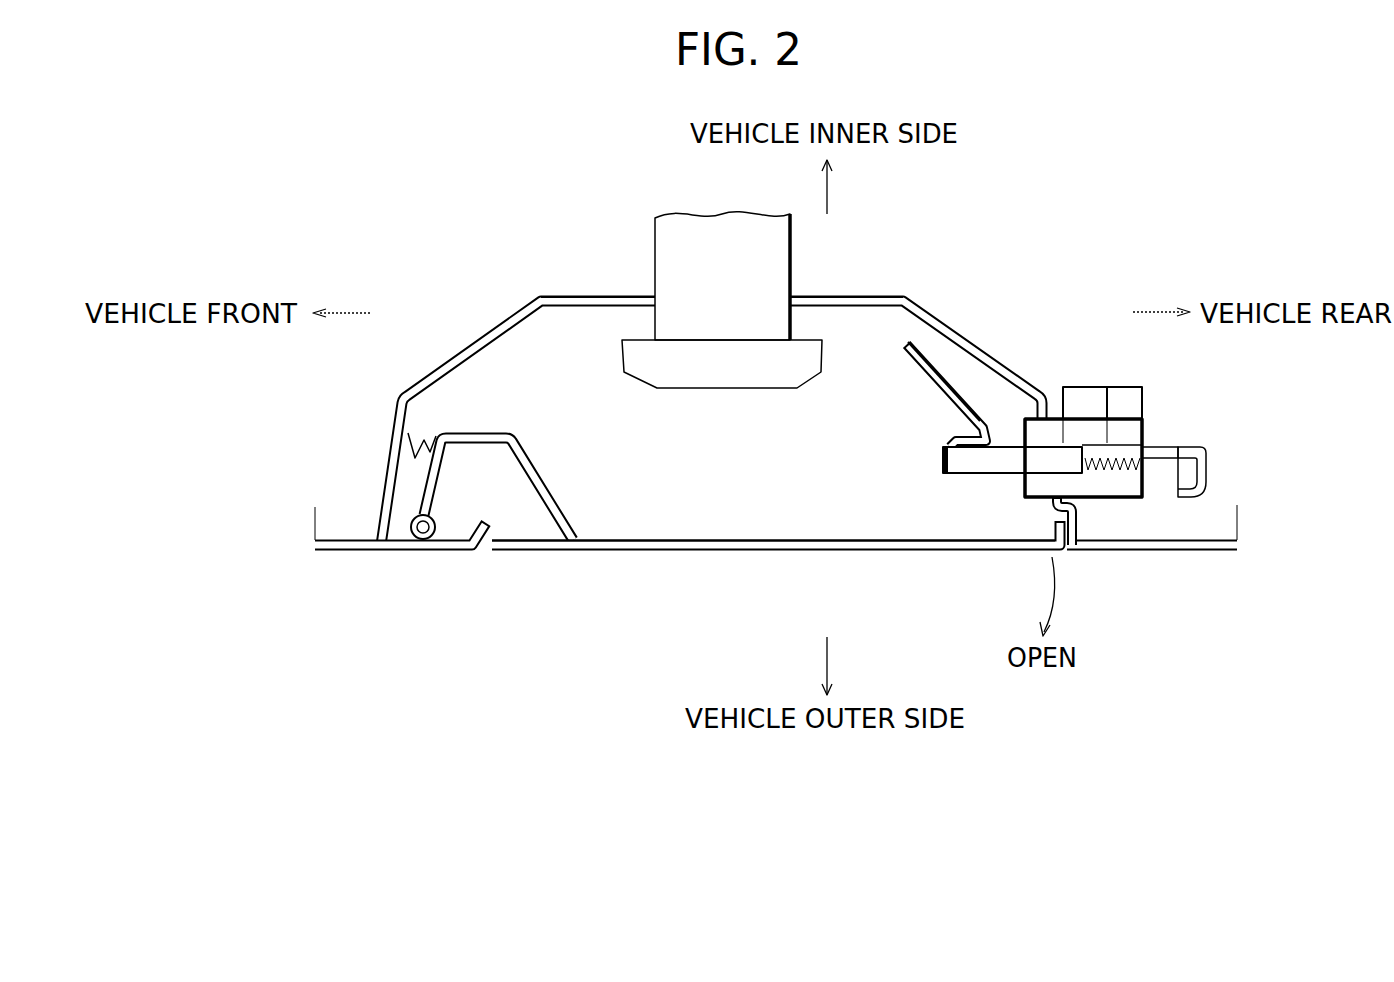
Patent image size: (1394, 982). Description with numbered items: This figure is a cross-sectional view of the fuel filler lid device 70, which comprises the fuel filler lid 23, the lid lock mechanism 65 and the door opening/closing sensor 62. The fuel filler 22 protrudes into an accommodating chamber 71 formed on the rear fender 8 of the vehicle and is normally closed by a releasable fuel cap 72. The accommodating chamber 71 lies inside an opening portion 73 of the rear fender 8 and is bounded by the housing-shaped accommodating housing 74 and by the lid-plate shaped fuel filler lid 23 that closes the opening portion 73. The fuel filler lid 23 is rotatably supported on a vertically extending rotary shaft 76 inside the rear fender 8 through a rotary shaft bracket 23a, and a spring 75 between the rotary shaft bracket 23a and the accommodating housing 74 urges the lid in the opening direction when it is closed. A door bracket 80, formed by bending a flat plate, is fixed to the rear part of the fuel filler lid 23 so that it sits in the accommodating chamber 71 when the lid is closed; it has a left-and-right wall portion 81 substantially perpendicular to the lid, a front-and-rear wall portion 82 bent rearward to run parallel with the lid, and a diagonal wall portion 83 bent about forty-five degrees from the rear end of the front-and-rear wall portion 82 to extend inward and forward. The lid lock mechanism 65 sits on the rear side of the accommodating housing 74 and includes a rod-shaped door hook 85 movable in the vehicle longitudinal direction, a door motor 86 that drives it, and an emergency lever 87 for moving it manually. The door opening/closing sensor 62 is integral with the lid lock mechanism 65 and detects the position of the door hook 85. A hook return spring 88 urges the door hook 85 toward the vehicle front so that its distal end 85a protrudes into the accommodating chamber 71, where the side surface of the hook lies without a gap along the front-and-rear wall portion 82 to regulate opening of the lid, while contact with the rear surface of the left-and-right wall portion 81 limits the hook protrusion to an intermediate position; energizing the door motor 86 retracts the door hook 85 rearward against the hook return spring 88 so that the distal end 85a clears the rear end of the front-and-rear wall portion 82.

The rear fender 8 is at (350, 553).
The fuel filler 22 is at (737, 342).
The fuel filler lid 23 is at (707, 556).
The rotary shaft bracket 23a is at (481, 433).
The door opening/closing sensor 62 is at (1124, 386).
The lid lock mechanism 65 is at (1146, 412).
The fuel filler lid device 70 is at (1021, 268).
The accommodating chamber 71 is at (796, 498).
The fuel cap 72 is at (688, 390).
The opening portion 73 is at (772, 550).
The accommodating housing 74 is at (884, 294).
The spring 75 is at (397, 428).
The rotary shaft 76 is at (423, 540).
The door bracket 80 is at (947, 373).
The left-and-right wall portion 81 is at (943, 457).
The front-and-rear wall portion 82 is at (962, 430).
The diagonal wall portion 83 is at (930, 353).
The door hook 85 is at (988, 474).
The distal end 85a is at (943, 473).
The door motor 86 is at (1082, 386).
The emergency lever 87 is at (1208, 456).
The hook return spring 88 is at (1118, 478).